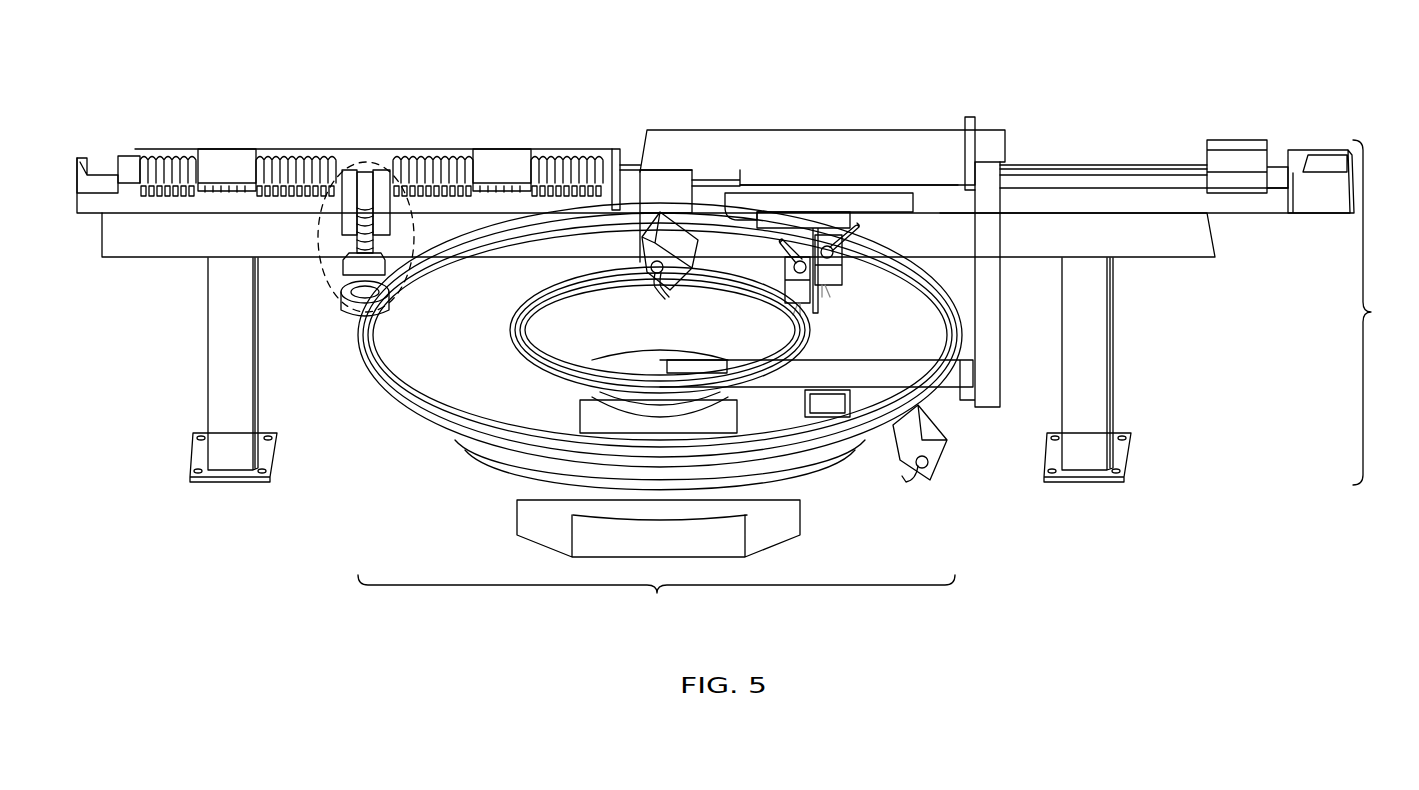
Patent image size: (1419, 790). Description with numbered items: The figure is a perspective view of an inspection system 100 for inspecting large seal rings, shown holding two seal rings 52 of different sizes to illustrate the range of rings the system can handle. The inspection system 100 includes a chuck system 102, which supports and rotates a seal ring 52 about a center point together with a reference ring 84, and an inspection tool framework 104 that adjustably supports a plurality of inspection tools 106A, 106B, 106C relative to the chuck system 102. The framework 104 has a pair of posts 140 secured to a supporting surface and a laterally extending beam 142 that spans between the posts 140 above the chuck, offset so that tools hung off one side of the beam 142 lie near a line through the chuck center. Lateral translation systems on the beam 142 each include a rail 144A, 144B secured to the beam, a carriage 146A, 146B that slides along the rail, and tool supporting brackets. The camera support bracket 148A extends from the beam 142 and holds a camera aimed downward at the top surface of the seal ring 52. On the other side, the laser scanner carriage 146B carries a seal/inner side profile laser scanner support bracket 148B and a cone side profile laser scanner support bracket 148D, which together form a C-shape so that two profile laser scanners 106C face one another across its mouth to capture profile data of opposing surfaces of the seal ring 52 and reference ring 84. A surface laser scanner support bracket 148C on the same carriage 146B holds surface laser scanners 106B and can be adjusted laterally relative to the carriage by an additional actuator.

The inspection system 100 is at (1268, 88).
The chuck system 102 is at (656, 599).
The inspection tool framework 104 is at (1380, 312).
The seal ring 52 is at (403, 370).
The reference ring 84 is at (410, 425).
The inspection tool 106A is at (318, 240).
The surface laser scanner 106B is at (828, 232).
The profile laser scanner 106C is at (646, 243).
The post 140 is at (208, 364).
The laterally extending beam 142 is at (135, 245).
The rail 144A is at (100, 172).
The rail 144B is at (1102, 162).
The carriage 146A is at (315, 158).
The laser scanner carriage 146B is at (806, 130).
The camera support bracket 148A is at (385, 169).
The seal/inner side profile laser scanner support bracket 148B is at (670, 182).
The surface laser scanner support bracket 148C is at (868, 220).
The cone side profile laser scanner support bracket 148D is at (976, 394).